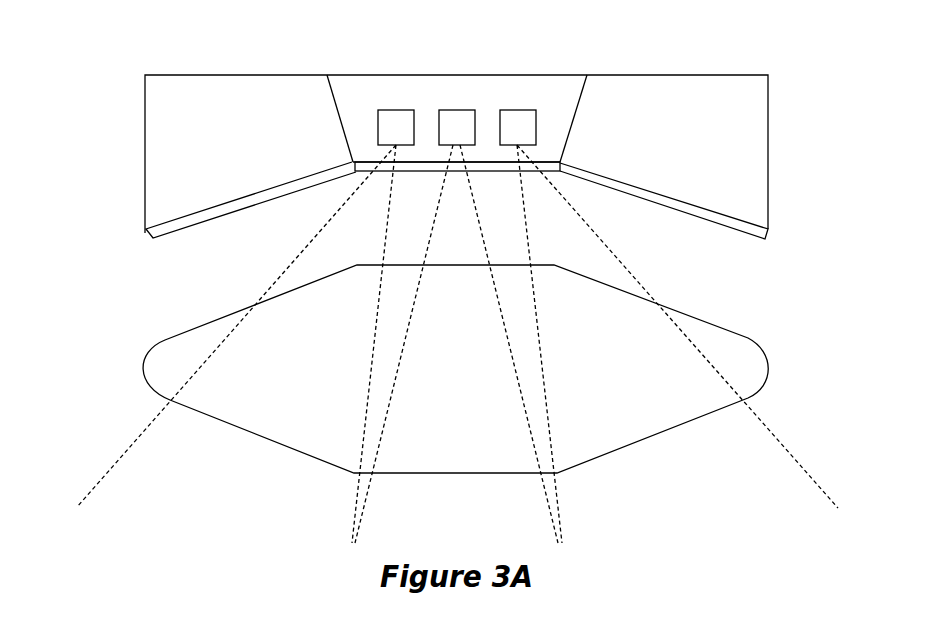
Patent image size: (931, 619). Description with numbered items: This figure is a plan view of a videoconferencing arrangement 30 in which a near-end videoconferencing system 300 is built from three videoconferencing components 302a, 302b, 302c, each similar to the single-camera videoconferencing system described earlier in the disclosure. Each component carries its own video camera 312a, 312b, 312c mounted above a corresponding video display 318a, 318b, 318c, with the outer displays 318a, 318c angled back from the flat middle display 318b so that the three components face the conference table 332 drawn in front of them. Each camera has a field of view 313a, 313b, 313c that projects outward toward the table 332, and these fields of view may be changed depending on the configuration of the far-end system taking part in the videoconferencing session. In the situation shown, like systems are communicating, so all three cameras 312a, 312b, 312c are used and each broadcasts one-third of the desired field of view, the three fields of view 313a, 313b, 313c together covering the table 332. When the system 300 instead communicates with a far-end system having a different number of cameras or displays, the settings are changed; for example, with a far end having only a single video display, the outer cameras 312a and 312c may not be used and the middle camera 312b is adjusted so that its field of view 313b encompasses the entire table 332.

The illumination system 30 is at (843, 115).
The videoconferencing system 300 is at (134, 75).
The videoconferencing component 302a is at (178, 75).
The videoconferencing component 302b is at (388, 75).
The videoconferencing component 302c is at (630, 75).
The video camera 312a is at (378, 123).
The video camera 312b is at (468, 110).
The video camera 312c is at (536, 123).
The field of view 313a is at (287, 272).
The field of view 313b is at (502, 315).
The field of view 313c is at (608, 247).
The video display 318a is at (170, 237).
The video display 318b is at (560, 162).
The video display 318c is at (729, 228).
The table 332 is at (455, 369).